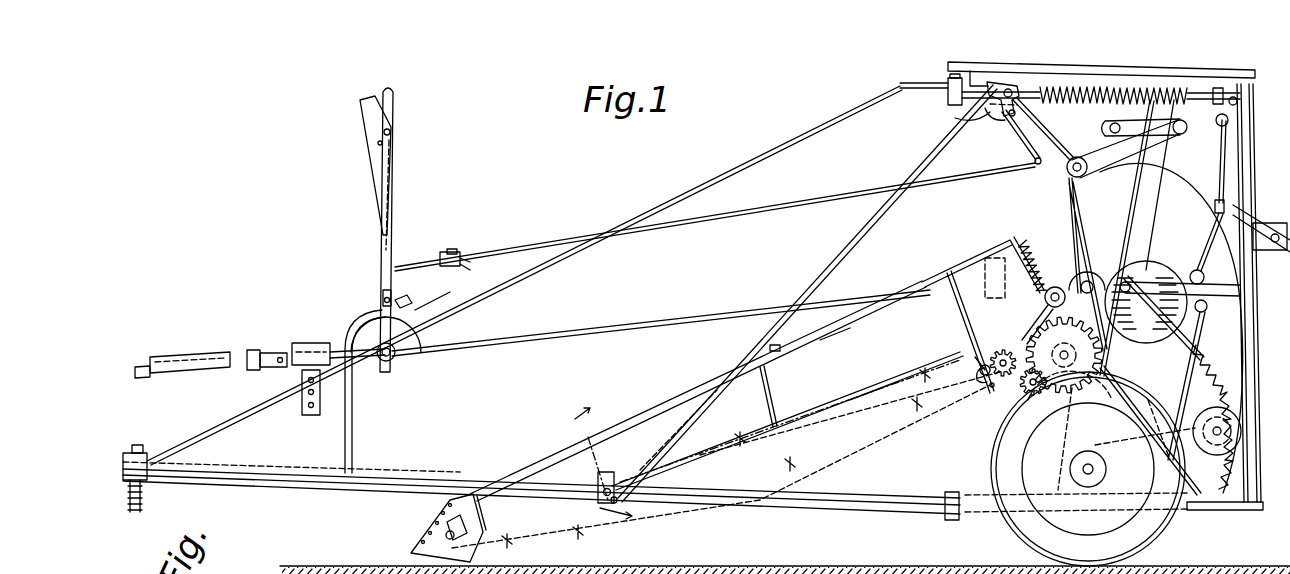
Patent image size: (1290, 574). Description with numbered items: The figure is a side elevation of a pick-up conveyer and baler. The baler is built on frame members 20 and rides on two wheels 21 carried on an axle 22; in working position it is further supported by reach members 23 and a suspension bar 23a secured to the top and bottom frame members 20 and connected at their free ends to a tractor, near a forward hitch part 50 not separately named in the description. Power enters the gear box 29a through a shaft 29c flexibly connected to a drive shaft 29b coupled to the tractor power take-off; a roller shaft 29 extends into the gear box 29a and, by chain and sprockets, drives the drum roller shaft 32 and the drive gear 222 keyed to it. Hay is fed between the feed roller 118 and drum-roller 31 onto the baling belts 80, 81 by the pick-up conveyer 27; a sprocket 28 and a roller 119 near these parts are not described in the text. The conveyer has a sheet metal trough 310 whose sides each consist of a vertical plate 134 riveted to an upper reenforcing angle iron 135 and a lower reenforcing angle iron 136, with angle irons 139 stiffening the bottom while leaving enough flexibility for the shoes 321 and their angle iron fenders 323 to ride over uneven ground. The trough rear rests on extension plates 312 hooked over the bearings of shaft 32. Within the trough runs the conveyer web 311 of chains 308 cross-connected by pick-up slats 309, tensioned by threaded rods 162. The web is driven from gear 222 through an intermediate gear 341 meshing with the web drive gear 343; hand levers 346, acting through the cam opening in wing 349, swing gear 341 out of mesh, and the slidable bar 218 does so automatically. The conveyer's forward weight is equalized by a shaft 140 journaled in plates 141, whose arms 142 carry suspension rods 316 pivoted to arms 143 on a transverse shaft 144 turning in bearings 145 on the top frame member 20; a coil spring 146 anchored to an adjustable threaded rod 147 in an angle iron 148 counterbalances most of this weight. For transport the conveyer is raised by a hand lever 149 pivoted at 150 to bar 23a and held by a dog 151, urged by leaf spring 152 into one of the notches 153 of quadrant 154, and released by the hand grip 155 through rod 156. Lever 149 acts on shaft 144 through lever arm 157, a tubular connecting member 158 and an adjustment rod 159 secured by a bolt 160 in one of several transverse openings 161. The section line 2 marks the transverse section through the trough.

The frame members 20 is at (948, 97).
The wheels 21 is at (1136, 536).
The axle 22 is at (1101, 476).
The reach members 23 is at (906, 494).
The suspension bar 23a is at (793, 142).
The pick-up conveyer 27 is at (663, 403).
The sprocket 28 is at (1078, 272).
The roller shaft 29 is at (1104, 276).
The gear box 29a is at (1062, 298).
The drive shaft 29b is at (688, 306).
The shaft 29c is at (995, 250).
The drum-roller 31 is at (1112, 364).
The drum roller shaft 32 is at (1064, 355).
The drawbar 50 is at (140, 380).
The baling belt 80 is at (1070, 206).
The baling belt 81 is at (1143, 338).
The feed roller 118 is at (1035, 330).
The roller 119 is at (1056, 291).
The vertical plate 134 is at (880, 398).
The upper reenforcing angle iron 135 is at (782, 348).
The lower reenforcing angle iron 136 is at (738, 446).
The angle irons 139 is at (770, 390).
The rotatable shaft 140 is at (604, 480).
The plates 141 is at (604, 495).
The arms 142 is at (608, 503).
The arm 143 is at (1002, 86).
The transverse shaft 144 is at (1000, 120).
The bearings 145 is at (986, 114).
The coil spring 146 is at (1095, 87).
The adjustable threaded rod 147 is at (1200, 91).
The angle iron 148 is at (1218, 88).
The hand lever 149 is at (393, 160).
The pivot 150 is at (392, 356).
The dog 151 is at (430, 301).
The leaf spring 152 is at (408, 302).
The notches 153 is at (358, 315).
The quadrant 154 is at (380, 304).
The hand grip 155 is at (372, 110).
The rod 156 is at (372, 147).
The lever arm 157 is at (1020, 150).
The tubular connecting member 158 is at (838, 192).
The adjustment rod 159 is at (433, 258).
The bolt 160 is at (451, 252).
The transverse openings 161 is at (462, 264).
The threaded rods 162 is at (472, 528).
The slidable bar 218 is at (1050, 410).
The drive gear 222 is at (1108, 402).
The chains 308 is at (854, 368).
The crop pick-up slats 309 is at (922, 370).
The trough 310 is at (834, 346).
The conveyer web 311 is at (758, 423).
The extension plates 312 is at (1010, 342).
The suspension rods 316 is at (744, 351).
The shoes 321 is at (441, 509).
The angle iron fender 323 is at (445, 524).
The intermediate gear 341 is at (1033, 392).
The conveyer web drive gear 343 is at (992, 387).
The hand levers 346 is at (990, 360).
The wing 349 is at (984, 380).
The section line 2 is at (593, 470).